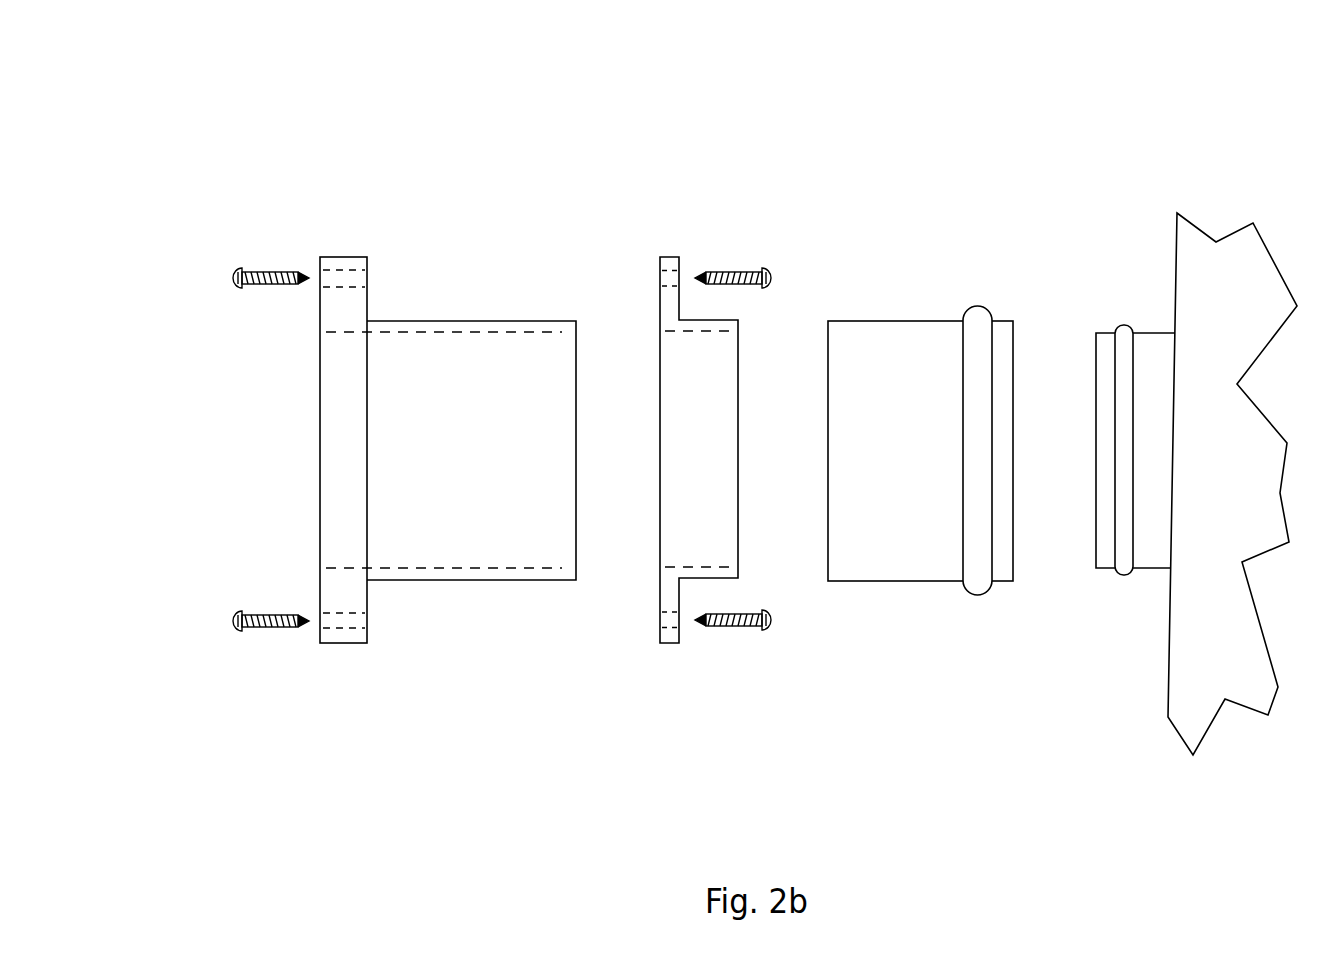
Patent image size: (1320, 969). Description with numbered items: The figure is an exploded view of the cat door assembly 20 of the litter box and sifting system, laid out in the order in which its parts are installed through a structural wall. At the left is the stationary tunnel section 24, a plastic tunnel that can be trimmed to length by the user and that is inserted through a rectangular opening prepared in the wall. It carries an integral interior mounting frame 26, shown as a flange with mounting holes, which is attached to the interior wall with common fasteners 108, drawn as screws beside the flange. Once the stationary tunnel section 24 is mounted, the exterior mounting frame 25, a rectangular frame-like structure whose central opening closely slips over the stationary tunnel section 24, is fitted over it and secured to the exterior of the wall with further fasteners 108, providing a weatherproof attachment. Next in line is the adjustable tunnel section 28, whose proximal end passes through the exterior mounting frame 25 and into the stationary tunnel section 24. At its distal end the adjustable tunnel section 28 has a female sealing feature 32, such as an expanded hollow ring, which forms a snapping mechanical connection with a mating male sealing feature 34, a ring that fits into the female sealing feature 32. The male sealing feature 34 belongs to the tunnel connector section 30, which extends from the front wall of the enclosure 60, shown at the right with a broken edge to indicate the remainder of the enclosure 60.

The cat door assembly 20 is at (380, 165).
The stationary tunnel section 24 is at (448, 580).
The exterior mounting frame 25 is at (672, 262).
The interior mounting frame 26 is at (343, 498).
The adjustable tunnel section 28 is at (907, 320).
The tunnel connector section 30 is at (1148, 567).
The female sealing feature 32 is at (977, 317).
The male sealing feature 34 is at (1117, 326).
The enclosure 60 is at (1250, 279).
The fasteners 108 is at (235, 293).